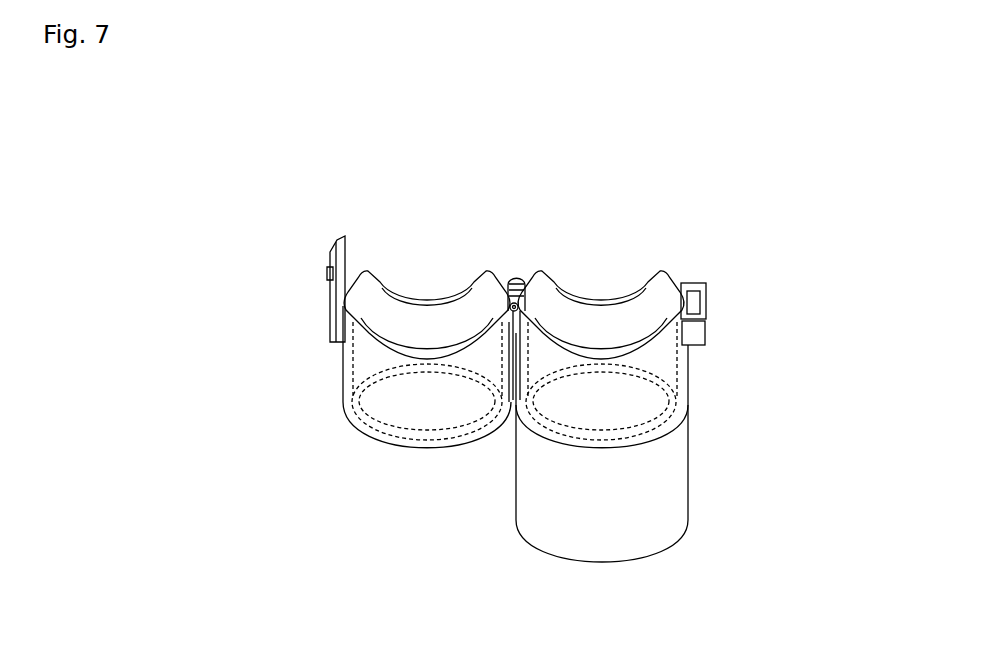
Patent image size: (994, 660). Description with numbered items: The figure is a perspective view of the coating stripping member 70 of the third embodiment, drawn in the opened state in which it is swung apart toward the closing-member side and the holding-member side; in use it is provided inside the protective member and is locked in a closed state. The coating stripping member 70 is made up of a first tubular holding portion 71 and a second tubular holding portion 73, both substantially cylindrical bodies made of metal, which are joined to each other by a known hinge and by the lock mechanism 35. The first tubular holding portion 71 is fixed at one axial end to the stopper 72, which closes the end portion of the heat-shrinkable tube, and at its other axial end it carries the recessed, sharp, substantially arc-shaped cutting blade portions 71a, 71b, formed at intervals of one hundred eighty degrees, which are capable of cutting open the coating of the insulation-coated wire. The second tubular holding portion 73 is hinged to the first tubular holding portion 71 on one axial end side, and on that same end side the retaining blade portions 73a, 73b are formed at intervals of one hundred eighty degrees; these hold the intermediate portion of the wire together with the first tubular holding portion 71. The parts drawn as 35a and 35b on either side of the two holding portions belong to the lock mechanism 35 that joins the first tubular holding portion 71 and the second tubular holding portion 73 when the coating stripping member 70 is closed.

The coating stripping member 70 is at (519, 203).
The first tubular holding portion 71 is at (708, 367).
The cutting blade portion 71a is at (607, 300).
The cutting blade portion 71b is at (567, 352).
The stopper 72 is at (688, 478).
The second tubular holding portion 73 is at (324, 419).
The retaining blade portion 73a is at (434, 292).
The retaining blade portion 73b is at (431, 354).
The lock mechanism 35 is at (318, 302).
The latch tab 35a is at (328, 262).
The latch receiver 35b is at (708, 292).